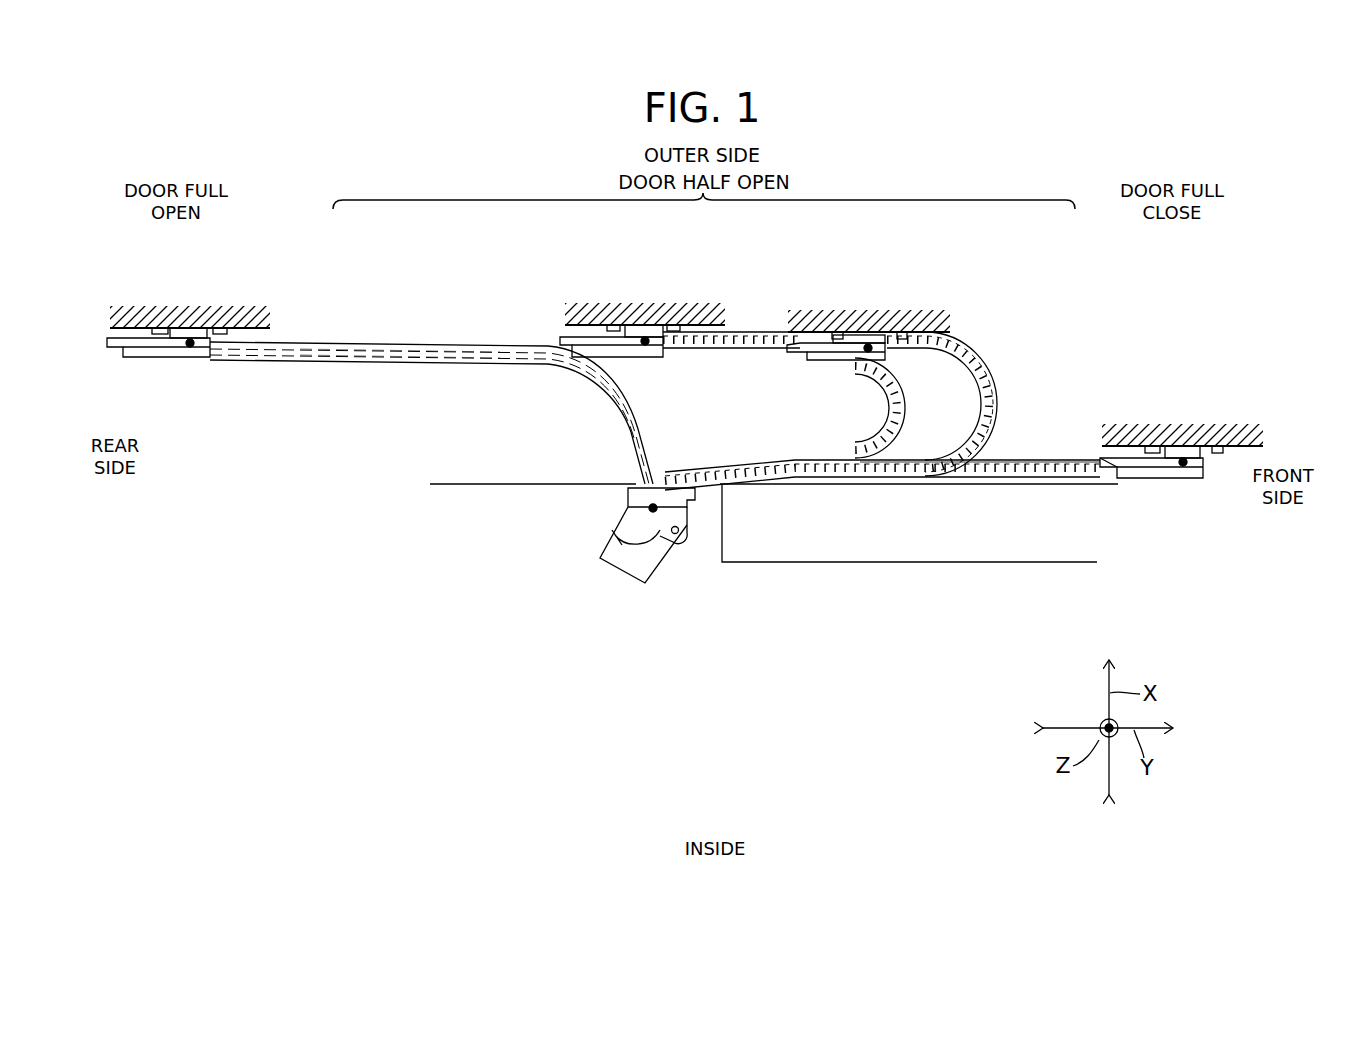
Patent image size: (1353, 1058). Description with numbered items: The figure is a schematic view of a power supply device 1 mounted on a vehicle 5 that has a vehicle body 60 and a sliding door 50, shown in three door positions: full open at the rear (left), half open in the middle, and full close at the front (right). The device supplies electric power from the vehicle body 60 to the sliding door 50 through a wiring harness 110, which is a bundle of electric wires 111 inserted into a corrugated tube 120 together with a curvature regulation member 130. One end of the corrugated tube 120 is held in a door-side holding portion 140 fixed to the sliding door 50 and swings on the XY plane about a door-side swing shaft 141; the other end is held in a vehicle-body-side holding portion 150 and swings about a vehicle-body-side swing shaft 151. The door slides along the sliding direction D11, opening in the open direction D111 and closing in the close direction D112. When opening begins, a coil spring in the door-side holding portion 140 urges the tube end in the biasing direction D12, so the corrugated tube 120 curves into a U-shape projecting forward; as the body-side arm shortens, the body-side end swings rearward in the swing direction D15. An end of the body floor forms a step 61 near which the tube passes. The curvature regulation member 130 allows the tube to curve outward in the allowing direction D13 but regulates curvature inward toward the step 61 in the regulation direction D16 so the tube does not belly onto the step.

The power supply device 1 is at (252, 568).
The vehicle 5 is at (392, 566).
The sliding door 50 is at (128, 326).
The vehicle body 60 is at (459, 482).
The step 61 is at (1049, 562).
The wiring harness 110 is at (410, 372).
The electric wires 111 is at (400, 356).
The corrugated tube 120 is at (376, 344).
The curvature regulation member 130 is at (1022, 484).
The door-side holding portion 140 is at (147, 360).
The door-side swing shaft 141 is at (189, 338).
The vehicle-body-side holding portion 150 is at (608, 536).
The vehicle-body-side swing shaft 151 is at (648, 508).
The door sliding direction D11 is at (585, 682).
The open direction D111 is at (585, 734).
The close direction D112 is at (598, 782).
The biasing direction D12 is at (243, 372).
The allowing direction D13 is at (1045, 440).
The swing direction D15 is at (605, 432).
The regulation direction D16 is at (825, 440).